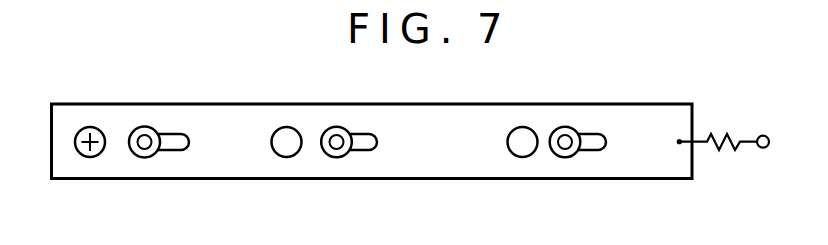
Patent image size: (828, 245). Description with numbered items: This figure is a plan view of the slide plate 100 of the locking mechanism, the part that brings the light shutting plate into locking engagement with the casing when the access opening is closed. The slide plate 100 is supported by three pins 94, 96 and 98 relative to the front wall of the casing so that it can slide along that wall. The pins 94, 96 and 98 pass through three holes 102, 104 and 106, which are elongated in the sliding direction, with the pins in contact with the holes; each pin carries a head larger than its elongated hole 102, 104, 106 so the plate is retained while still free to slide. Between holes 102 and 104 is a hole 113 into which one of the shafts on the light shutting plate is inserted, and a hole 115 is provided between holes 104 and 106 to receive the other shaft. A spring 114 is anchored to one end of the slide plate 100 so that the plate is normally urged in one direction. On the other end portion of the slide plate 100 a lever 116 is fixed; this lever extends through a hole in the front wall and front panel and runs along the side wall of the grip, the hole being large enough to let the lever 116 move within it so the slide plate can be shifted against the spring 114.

The slide plate 100 is at (443, 104).
The lever 116 is at (90, 127).
The pin 94 is at (144, 156).
The elongated hole 102 is at (180, 134).
The hole 113 is at (285, 127).
The pin 96 is at (335, 156).
The elongated hole 104 is at (366, 134).
The hole 115 is at (524, 127).
The pin 98 is at (564, 156).
The elongated hole 106 is at (596, 134).
The spring 114 is at (723, 136).